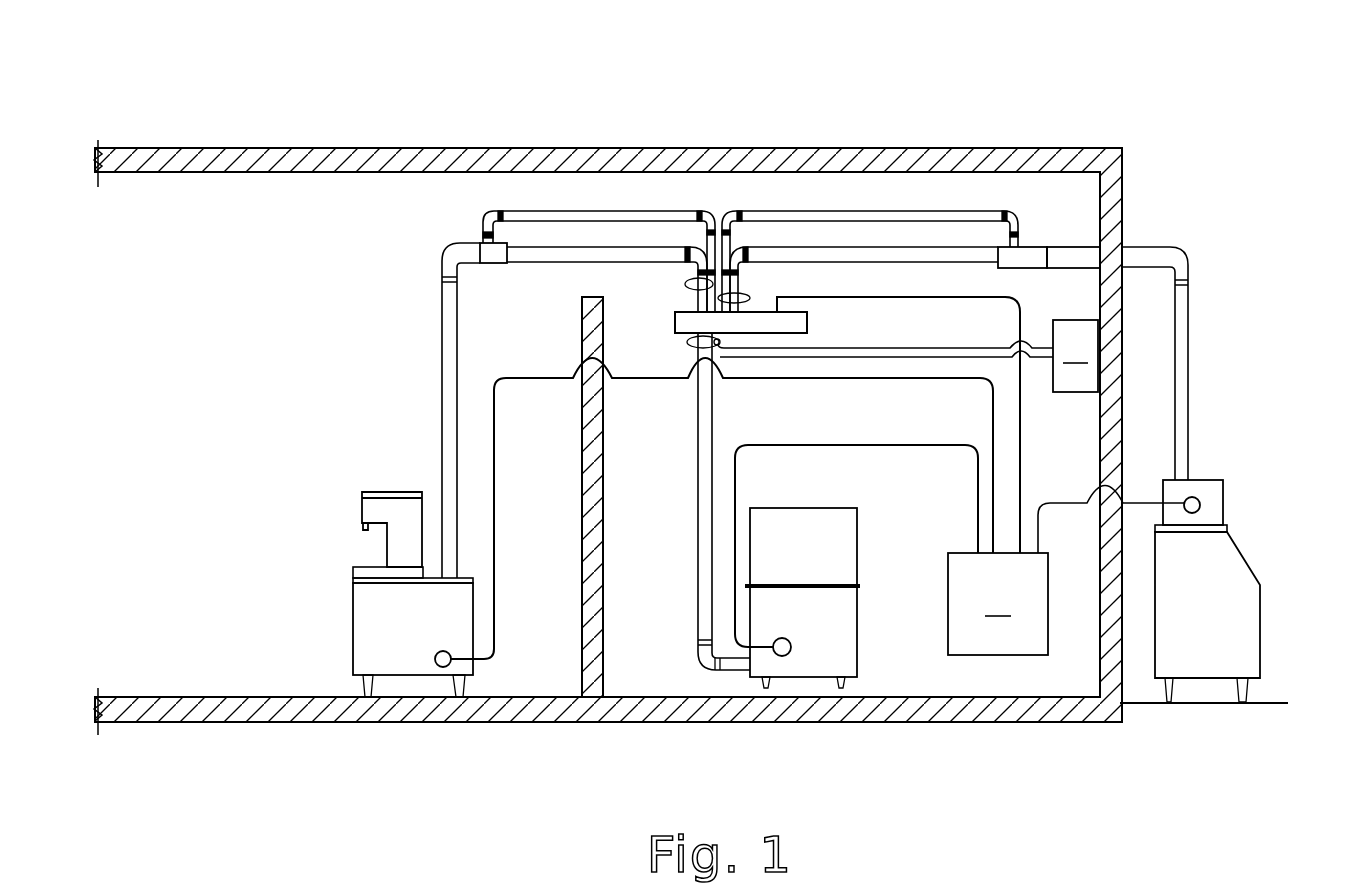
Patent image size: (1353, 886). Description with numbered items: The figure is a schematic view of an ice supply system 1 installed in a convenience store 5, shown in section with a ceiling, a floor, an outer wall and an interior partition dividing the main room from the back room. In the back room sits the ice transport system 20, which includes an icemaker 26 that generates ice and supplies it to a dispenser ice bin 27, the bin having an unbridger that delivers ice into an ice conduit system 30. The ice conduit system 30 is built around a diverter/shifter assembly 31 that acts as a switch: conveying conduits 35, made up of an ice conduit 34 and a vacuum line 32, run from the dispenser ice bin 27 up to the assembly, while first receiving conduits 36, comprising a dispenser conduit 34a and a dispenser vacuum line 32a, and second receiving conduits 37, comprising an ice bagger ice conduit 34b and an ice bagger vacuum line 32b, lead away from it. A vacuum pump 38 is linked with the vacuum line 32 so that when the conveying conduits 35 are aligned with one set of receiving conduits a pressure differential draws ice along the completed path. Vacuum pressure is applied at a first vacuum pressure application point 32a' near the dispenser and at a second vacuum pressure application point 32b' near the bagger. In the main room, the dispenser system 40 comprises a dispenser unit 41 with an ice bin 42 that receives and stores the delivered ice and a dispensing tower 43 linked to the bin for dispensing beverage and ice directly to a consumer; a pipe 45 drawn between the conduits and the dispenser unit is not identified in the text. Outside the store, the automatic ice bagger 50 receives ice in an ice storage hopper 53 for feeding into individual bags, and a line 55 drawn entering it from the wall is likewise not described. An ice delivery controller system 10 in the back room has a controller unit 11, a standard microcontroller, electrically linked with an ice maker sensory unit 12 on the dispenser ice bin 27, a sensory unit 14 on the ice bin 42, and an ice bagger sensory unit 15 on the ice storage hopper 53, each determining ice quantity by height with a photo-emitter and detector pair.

The ice supply system 1 is at (832, 122).
The convenience store 5 is at (360, 142).
The ice delivery controller system 10 is at (941, 575).
The controller unit 11 is at (998, 605).
The ice maker sensory unit 12 is at (790, 639).
The sensory unit 14 is at (447, 652).
The ice bagger sensory unit 15 is at (1200, 510).
The ice transport system 20 is at (692, 562).
The icemaker 26 is at (814, 501).
The dispenser ice bin 27 is at (852, 650).
The ice conduit system 30 is at (822, 321).
The diverter/shifter assembly 31 is at (750, 335).
The vacuum line 32 is at (1040, 350).
The dispenser vacuum line 32a is at (599, 245).
The ice bagger vacuum line 32b is at (870, 245).
The first vacuum pressure application point 32a' is at (447, 236).
The second vacuum pressure application point 32b' is at (1049, 242).
The ice conduit 34 is at (692, 419).
The dispenser conduit 34a is at (563, 265).
The ice bagger ice conduit 34b is at (820, 253).
The conveying conduits 35 is at (687, 342).
The first receiving conduits 36 is at (685, 284).
The second receiving conduits 37 is at (750, 298).
The vacuum pump 38 is at (1075, 356).
The dispenser system 40 is at (338, 498).
The dispenser unit 41 is at (338, 617).
The ice bin 42 is at (468, 578).
The dispensing tower 43 is at (410, 508).
The supply pipe 45 is at (428, 380).
The automatic ice bagger 50 is at (1255, 481).
The ice storage hopper 53 is at (1200, 483).
The feed pipe 55 is at (1177, 244).